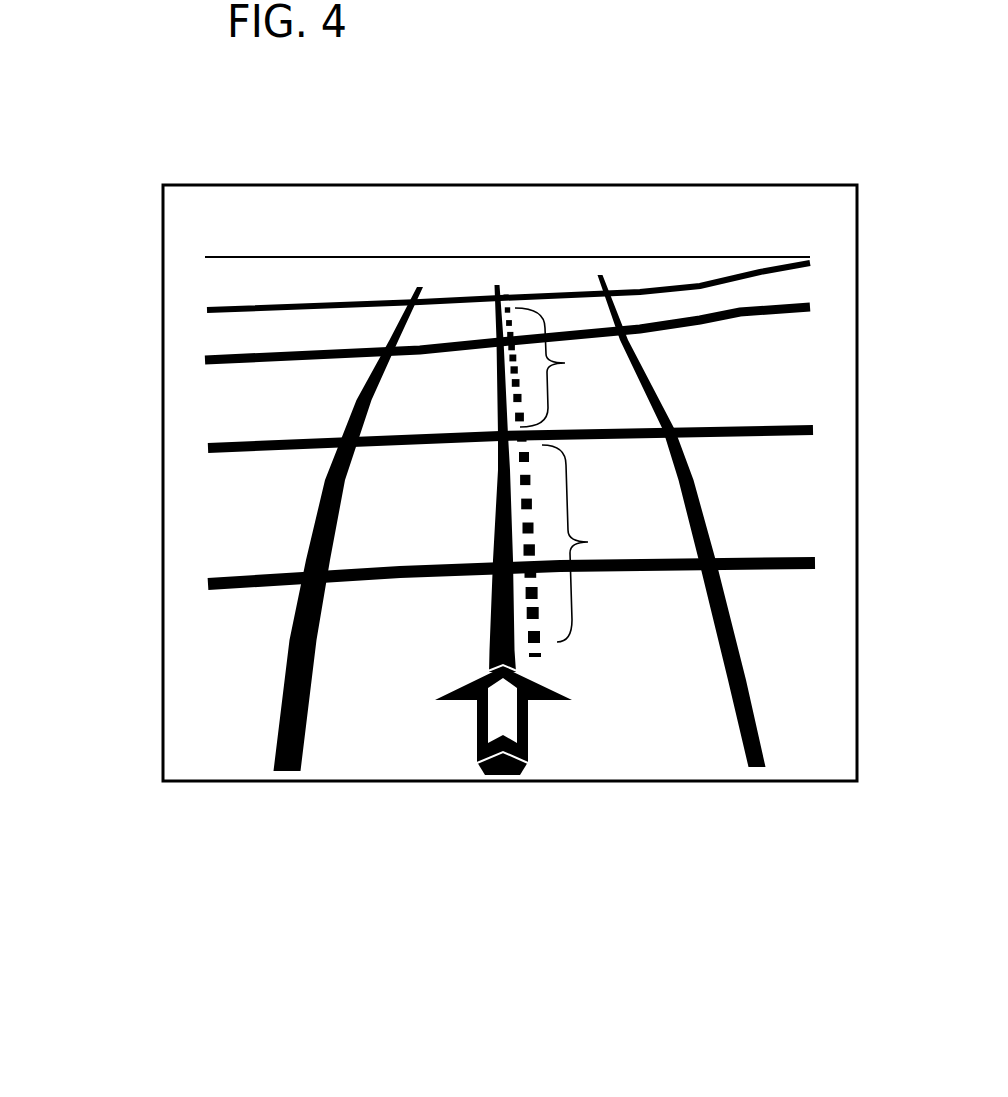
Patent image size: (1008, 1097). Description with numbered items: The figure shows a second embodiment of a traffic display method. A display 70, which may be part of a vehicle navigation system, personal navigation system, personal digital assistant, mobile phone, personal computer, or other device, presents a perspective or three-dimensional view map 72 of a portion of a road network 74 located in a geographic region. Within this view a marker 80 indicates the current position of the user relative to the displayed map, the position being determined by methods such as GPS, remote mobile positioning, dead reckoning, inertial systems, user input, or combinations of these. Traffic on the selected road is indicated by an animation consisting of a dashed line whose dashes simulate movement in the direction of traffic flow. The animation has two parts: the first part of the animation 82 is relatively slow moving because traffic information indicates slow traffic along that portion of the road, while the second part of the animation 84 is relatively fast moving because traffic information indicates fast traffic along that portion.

The display 70 is at (425, 168).
The perspective or 3D view map 72 is at (228, 623).
The road network 74 is at (303, 435).
The marker 80 is at (473, 708).
The first part of the animation 82 is at (608, 514).
The second part of the animation 84 is at (600, 368).